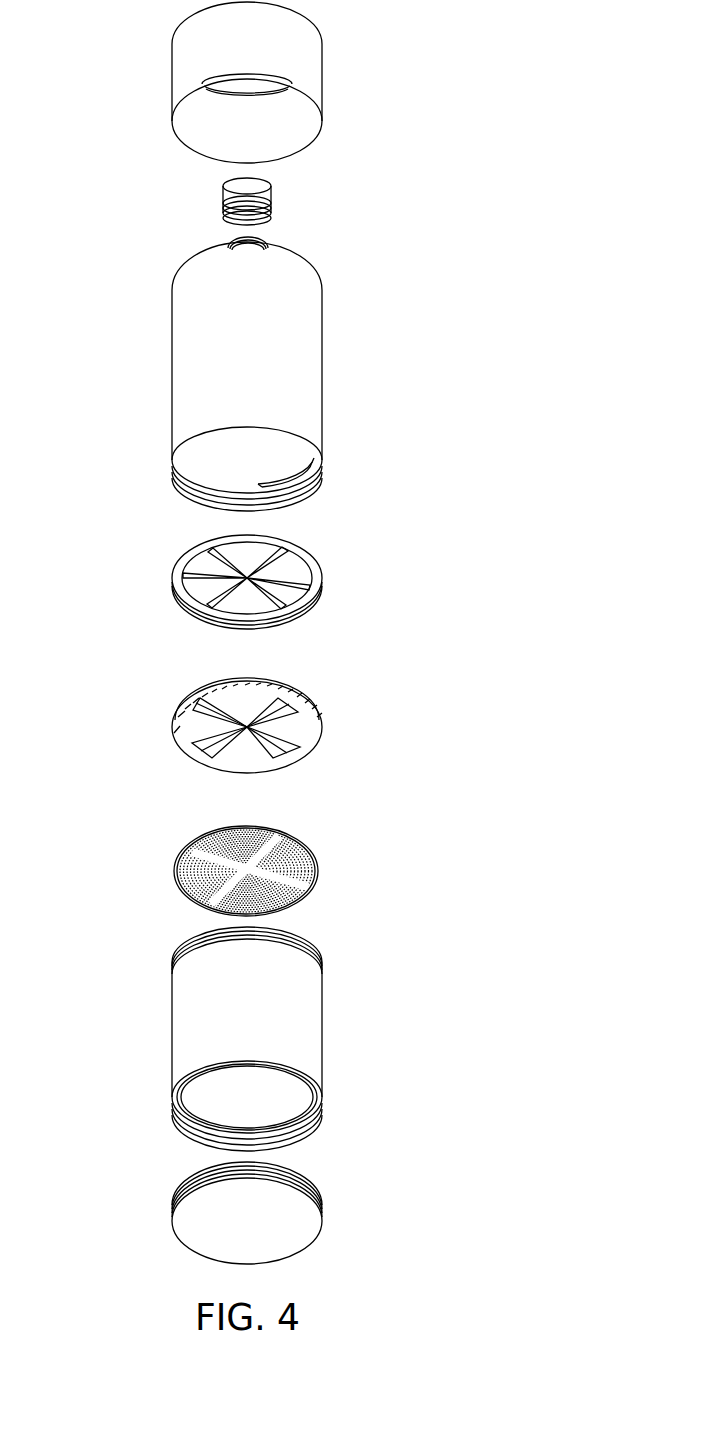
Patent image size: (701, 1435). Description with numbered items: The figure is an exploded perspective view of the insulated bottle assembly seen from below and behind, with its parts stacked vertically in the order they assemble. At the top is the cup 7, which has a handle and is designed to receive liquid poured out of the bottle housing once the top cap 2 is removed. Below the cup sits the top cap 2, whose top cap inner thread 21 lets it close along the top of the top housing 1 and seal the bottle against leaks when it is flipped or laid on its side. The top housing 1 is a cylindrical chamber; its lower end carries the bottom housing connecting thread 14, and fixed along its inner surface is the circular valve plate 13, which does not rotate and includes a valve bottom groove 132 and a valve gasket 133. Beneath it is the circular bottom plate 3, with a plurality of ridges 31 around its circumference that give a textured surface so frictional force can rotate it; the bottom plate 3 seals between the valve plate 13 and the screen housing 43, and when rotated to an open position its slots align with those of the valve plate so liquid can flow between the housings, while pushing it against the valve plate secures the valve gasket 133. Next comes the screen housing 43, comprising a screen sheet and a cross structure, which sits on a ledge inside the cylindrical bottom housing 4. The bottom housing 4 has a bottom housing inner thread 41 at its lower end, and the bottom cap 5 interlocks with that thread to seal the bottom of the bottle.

The top housing 1 is at (185, 342).
The top cap 2 is at (222, 200).
The top cap inner thread 21 is at (270, 220).
The bottom plate 3 is at (158, 748).
The plurality of ridges 31 is at (200, 695).
The bottom housing 4 is at (183, 1003).
The bottom housing inner thread 41 is at (298, 1135).
The screen housing 43 is at (158, 860).
The bottom cap 5 is at (180, 1218).
The cup 7 is at (178, 78).
The valve plate 13 is at (182, 560).
The valve bottom groove 132 is at (318, 562).
The valve gasket 133 is at (318, 594).
The bottom housing connecting thread 14 is at (310, 492).